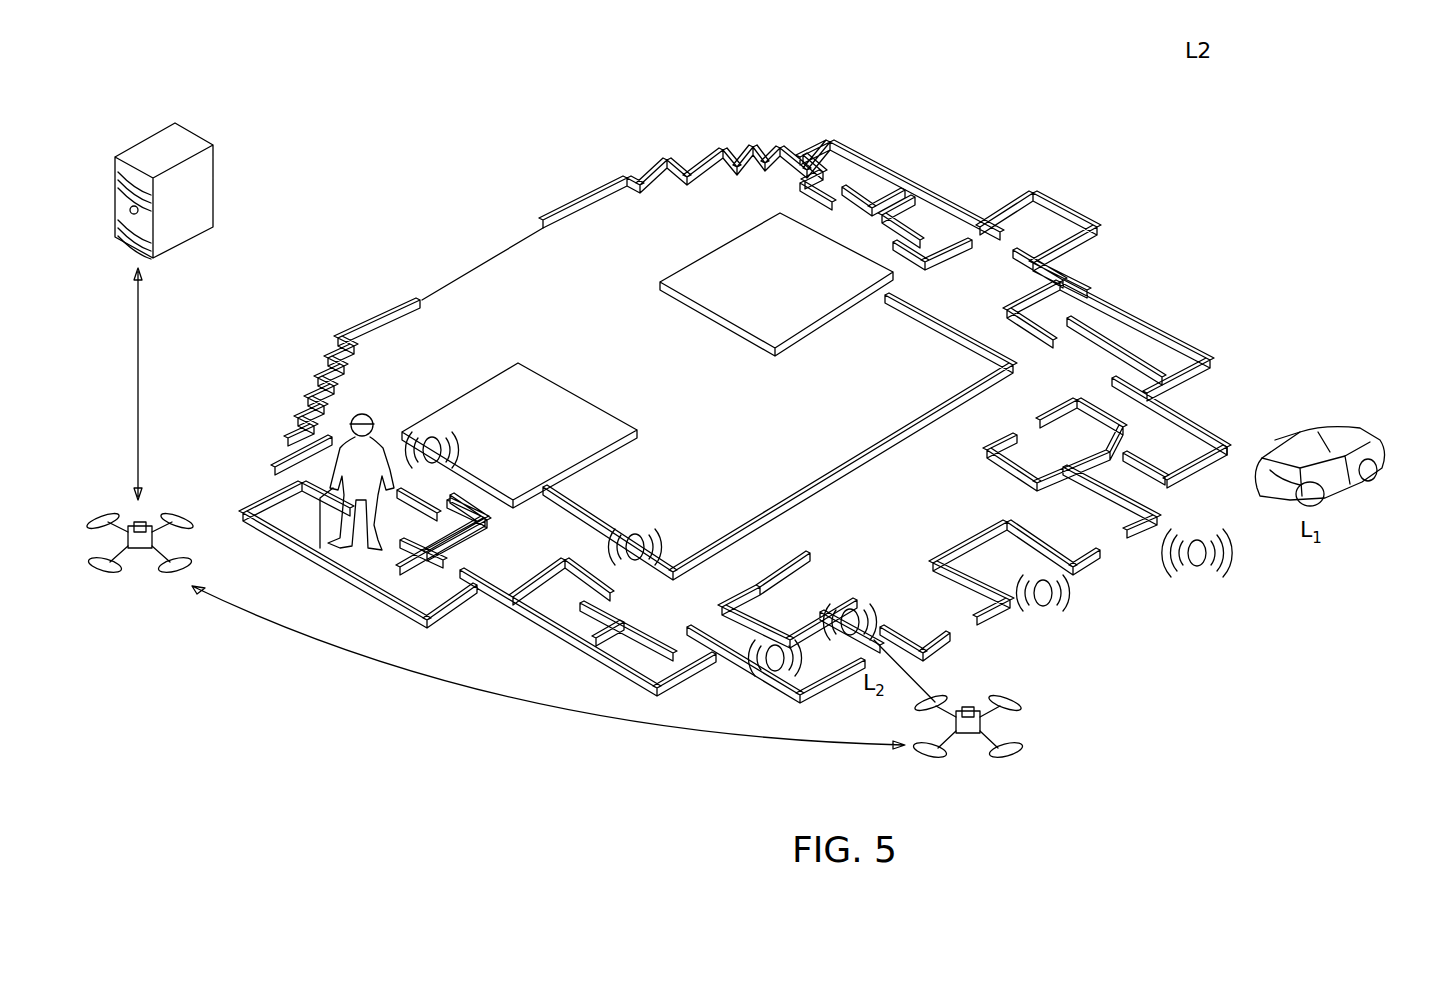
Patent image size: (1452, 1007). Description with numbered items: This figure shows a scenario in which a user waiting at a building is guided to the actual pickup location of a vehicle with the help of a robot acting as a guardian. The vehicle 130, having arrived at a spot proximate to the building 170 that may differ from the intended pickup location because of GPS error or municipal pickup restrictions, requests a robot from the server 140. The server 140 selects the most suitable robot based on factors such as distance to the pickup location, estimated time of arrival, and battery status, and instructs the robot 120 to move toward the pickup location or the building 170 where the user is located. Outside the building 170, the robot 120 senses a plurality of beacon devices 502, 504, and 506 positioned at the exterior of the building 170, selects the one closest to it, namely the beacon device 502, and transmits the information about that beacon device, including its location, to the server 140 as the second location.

The robot 120 is at (140, 552).
The vehicle 130 is at (1380, 441).
The server 140 is at (215, 182).
The building 170 is at (1128, 316).
The beacon device 502 is at (862, 612).
The beacon device 504 is at (1045, 607).
The beacon device 506 is at (760, 672).